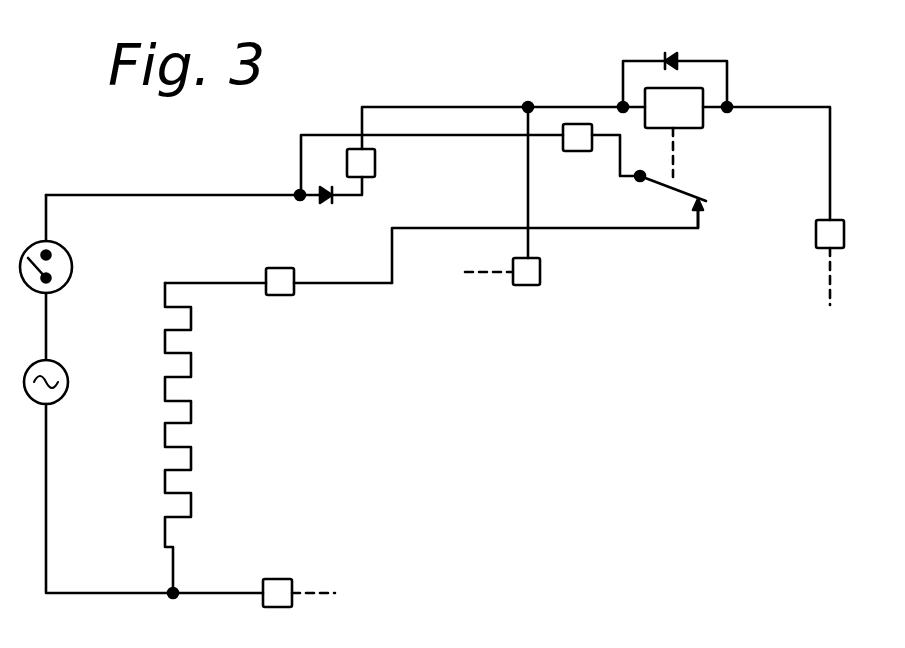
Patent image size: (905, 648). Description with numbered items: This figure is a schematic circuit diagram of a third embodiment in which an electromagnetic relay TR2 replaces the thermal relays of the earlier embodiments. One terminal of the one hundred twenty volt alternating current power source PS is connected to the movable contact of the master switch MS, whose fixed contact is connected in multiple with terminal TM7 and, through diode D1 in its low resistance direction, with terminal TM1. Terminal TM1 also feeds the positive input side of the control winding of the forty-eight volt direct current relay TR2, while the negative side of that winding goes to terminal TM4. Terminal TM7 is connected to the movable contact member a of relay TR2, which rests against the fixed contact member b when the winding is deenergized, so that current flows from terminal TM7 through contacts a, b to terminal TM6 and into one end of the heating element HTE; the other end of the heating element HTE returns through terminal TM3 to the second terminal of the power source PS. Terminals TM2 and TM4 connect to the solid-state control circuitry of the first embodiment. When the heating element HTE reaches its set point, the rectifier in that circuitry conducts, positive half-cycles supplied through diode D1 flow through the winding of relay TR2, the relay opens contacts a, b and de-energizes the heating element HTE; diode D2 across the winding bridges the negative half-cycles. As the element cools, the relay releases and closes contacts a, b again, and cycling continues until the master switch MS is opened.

The master switch MS is at (72, 267).
The alternating current power source PS is at (68, 382).
The heating element HTE is at (192, 408).
The terminal TM1 is at (375, 163).
The terminal TM2 is at (528, 285).
The terminal TM3 is at (273, 578).
The terminal TM4 is at (822, 250).
The terminal TM6 is at (278, 295).
The terminal TM7 is at (577, 151).
The diode D1 is at (324, 204).
The diode D2 is at (667, 52).
The electromagnetic relay TR2 is at (703, 120).
The movable contact member a is at (672, 194).
The fixed contact member b is at (707, 212).